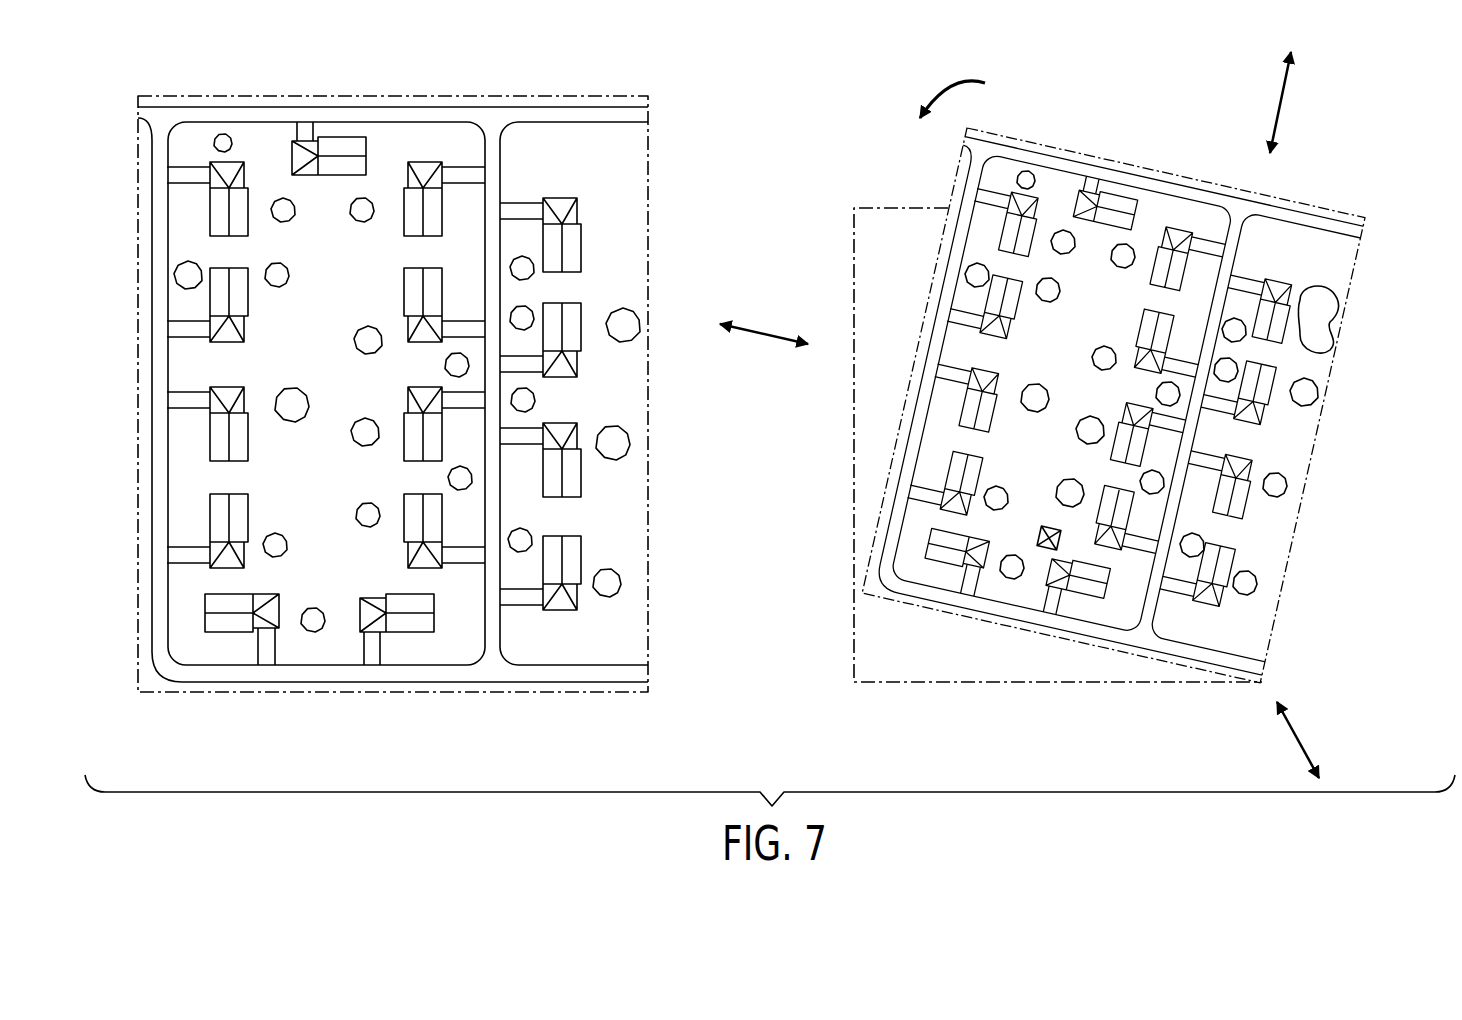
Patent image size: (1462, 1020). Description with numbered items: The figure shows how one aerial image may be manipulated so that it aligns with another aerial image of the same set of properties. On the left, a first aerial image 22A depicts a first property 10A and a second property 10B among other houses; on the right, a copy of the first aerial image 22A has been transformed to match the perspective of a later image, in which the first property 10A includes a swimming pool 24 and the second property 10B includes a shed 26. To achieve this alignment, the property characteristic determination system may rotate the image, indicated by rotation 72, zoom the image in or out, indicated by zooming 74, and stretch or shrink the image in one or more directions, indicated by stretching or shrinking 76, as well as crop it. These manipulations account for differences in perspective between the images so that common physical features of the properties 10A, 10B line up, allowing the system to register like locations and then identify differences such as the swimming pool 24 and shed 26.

The first property 10A is at (560, 198).
The second property 10B is at (217, 603).
The first aerial image 22A is at (683, 135).
The swimming pool 24 is at (1327, 305).
The shed 26 is at (1046, 528).
The rotation 72 is at (948, 83).
The zooming in or out 74 is at (1278, 100).
The stretching or shrinking 76 is at (1300, 740).